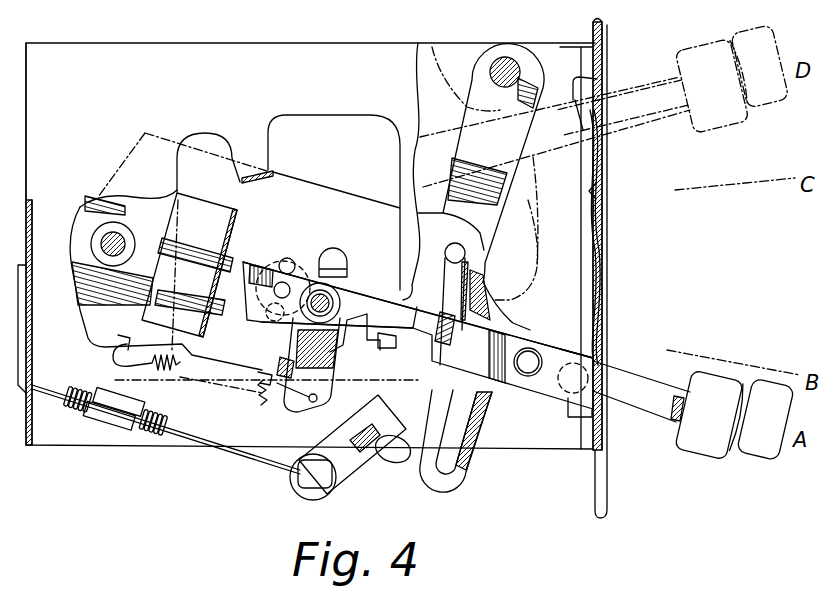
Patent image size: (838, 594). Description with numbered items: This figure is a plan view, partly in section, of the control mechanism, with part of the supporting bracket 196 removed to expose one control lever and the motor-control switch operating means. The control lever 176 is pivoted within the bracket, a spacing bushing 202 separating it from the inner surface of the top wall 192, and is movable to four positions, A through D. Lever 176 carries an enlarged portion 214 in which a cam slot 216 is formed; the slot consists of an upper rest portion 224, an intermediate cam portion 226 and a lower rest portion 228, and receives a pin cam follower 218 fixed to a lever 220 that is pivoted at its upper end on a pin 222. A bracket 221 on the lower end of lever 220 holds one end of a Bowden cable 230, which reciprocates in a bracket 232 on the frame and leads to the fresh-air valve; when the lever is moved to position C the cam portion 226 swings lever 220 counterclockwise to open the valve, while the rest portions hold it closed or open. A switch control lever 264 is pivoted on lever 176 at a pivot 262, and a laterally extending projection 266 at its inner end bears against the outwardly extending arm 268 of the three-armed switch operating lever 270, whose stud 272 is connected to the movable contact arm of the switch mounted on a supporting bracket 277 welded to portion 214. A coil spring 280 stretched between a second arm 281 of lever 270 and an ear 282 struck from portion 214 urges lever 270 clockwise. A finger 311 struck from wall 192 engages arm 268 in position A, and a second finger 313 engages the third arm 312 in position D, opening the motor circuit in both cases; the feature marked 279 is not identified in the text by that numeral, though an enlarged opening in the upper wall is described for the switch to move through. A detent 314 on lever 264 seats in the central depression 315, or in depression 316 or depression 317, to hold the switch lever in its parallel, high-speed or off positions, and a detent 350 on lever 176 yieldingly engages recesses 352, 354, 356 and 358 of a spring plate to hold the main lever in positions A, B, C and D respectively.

The control lever 176 is at (758, 450).
The top wall 192 is at (163, 70).
The supporting bracket 196 is at (26, 57).
The spacing bushing 202 is at (105, 243).
The enlarged portion 214 is at (433, 232).
The cam slot 216 is at (490, 406).
The pin cam follower 218 is at (466, 253).
The lever 220 is at (477, 107).
The bracket 221 is at (320, 484).
The pin 222 is at (505, 70).
The upper rest portion 224 is at (498, 303).
The intermediate cam portion 226 is at (452, 378).
The lower rest portion 228 is at (444, 428).
The Bowden cable 230 is at (258, 468).
The bracket 232 is at (118, 437).
The pivot 262 is at (527, 378).
The switch control lever 264 is at (641, 416).
The laterally extending projection 266 is at (396, 345).
The outwardly extending arm 268 is at (403, 305).
The three armed switch operating lever 270 is at (297, 336).
The stud 272 is at (326, 298).
The supporting bracket 277 is at (218, 218).
The housing portion 279 is at (341, 114).
The coil spring 280 is at (264, 408).
The second arm 281 is at (320, 398).
The ear 282 is at (122, 335).
The finger 311 is at (368, 348).
The third arm 312 is at (255, 262).
The second finger 313 is at (273, 178).
The detent 314 is at (274, 291).
The central depression 315 is at (325, 268).
The depression 316 is at (266, 314).
The depression 317 is at (287, 258).
The detent 350 is at (580, 384).
The recess 352 is at (570, 418).
The recess 354 is at (593, 340).
The recess 356 is at (600, 192).
The recess 358 is at (593, 108).